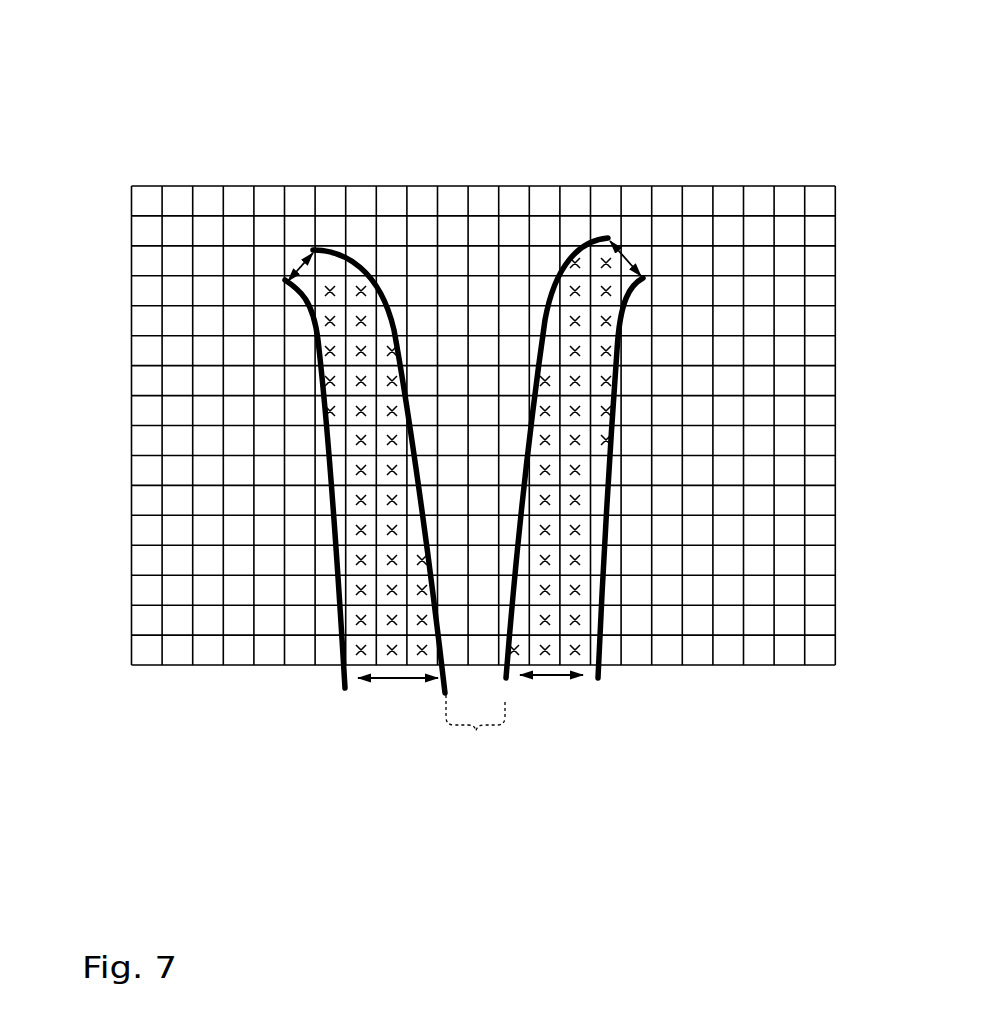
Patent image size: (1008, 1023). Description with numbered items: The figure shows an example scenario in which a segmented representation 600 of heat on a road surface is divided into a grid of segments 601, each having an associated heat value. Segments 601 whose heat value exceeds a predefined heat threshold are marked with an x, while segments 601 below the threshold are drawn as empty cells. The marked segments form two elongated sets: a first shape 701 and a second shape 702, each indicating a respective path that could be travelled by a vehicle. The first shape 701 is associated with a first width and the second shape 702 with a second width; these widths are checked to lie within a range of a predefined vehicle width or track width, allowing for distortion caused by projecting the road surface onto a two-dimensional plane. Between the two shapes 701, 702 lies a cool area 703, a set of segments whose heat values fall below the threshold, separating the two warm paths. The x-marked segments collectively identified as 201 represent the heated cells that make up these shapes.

The segmented representation 600 is at (338, 87).
The segments 601 is at (237, 480).
The first shape 701 is at (318, 365).
The second shape 702 is at (620, 413).
The cool area 703 is at (476, 732).
The marked cells 201 is at (400, 618).